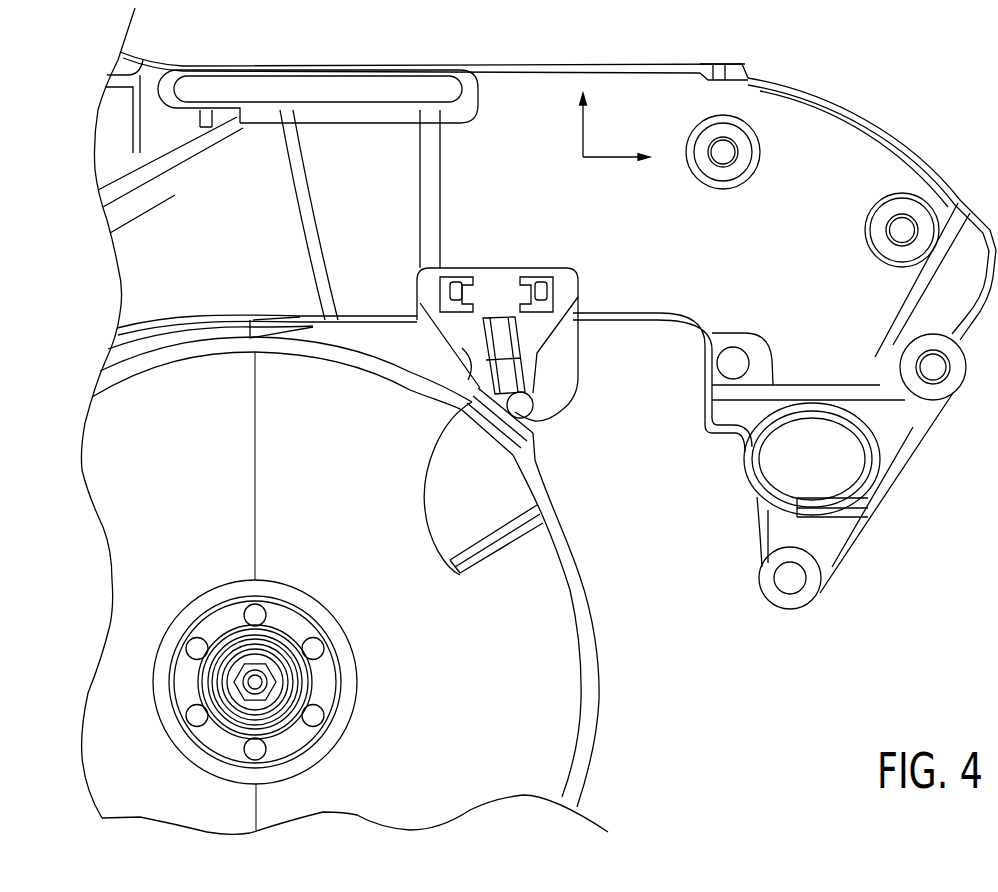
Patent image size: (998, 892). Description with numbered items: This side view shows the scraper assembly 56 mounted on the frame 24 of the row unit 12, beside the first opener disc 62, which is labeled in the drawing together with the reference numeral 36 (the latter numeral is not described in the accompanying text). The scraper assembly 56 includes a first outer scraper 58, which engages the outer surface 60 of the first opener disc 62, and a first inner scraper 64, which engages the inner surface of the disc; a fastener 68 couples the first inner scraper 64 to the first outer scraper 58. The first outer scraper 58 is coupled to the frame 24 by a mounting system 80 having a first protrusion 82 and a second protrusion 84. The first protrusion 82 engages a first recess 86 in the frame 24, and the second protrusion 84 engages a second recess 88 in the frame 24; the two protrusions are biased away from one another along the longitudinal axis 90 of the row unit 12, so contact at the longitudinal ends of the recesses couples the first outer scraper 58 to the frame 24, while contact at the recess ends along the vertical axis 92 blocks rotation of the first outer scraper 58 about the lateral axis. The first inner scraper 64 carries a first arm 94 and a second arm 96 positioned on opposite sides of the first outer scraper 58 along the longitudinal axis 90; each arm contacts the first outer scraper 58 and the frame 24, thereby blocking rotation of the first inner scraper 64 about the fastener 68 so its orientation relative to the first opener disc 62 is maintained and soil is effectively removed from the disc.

The row unit 12 is at (547, 323).
The frame 24 is at (857, 113).
The tire 36 is at (575, 647).
The first opener disc 62 is at (394, 561).
The scraper assembly 56 is at (537, 238).
The first outer scraper 58 is at (570, 287).
The outer surface 60 is at (553, 612).
The first inner scraper 64 is at (557, 393).
The fastener 68 is at (530, 408).
The mounting system 80 is at (472, 240).
The first protrusion 82 is at (434, 252).
The second protrusion 84 is at (547, 293).
The first recess 86 is at (456, 290).
The second recess 88 is at (530, 292).
The longitudinal axis 90 is at (612, 160).
The vertical axis 92 is at (583, 130).
The first arm 94 is at (433, 347).
The second arm 96 is at (567, 357).